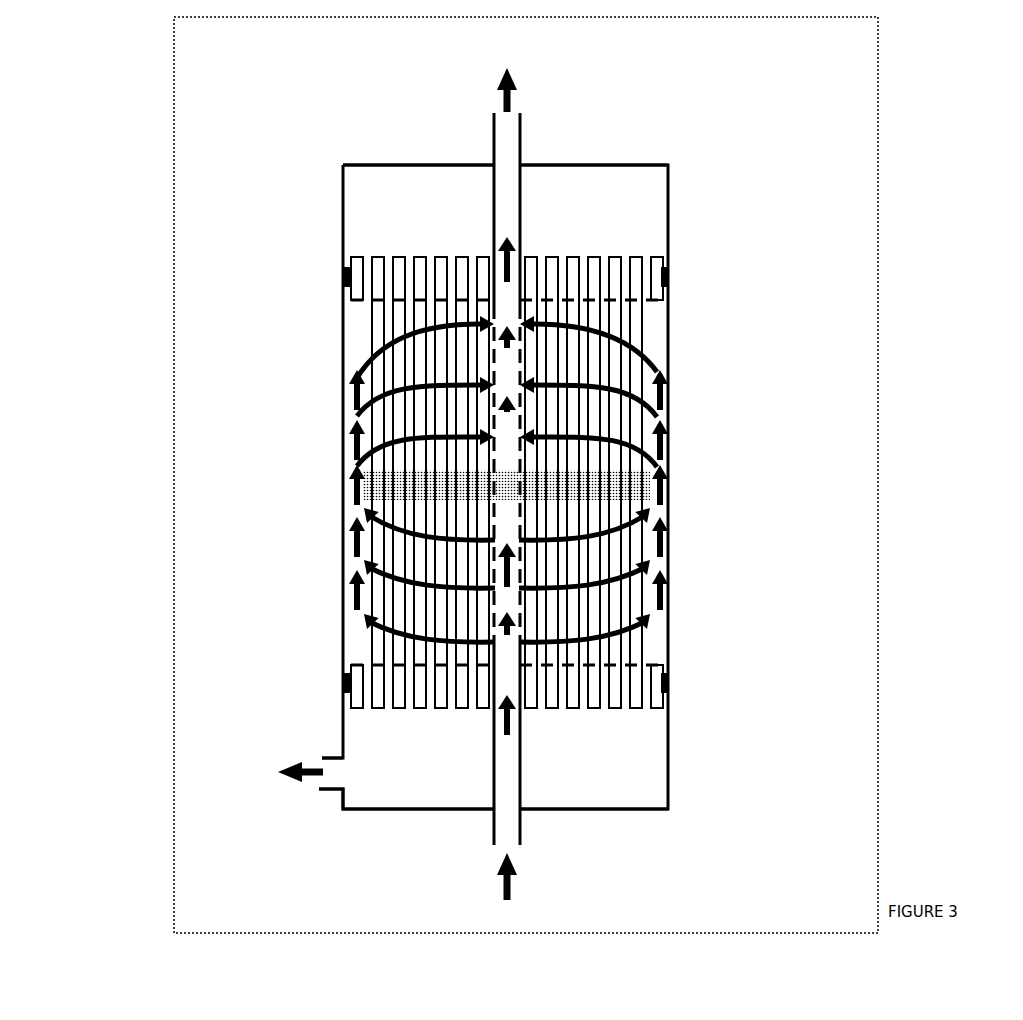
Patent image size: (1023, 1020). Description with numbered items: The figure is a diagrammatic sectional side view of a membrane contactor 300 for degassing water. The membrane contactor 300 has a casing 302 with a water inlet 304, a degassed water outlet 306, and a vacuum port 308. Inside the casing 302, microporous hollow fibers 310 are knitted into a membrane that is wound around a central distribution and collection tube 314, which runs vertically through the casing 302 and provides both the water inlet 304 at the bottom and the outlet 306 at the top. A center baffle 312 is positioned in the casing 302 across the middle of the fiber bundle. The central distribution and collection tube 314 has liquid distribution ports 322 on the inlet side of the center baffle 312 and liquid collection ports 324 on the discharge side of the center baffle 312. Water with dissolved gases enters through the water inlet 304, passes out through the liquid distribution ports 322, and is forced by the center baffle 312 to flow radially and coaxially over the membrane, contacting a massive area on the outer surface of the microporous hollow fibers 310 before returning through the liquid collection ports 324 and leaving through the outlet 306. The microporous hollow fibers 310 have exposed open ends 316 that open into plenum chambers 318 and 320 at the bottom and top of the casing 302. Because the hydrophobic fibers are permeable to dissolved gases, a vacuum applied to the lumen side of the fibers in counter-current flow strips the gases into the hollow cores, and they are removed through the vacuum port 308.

The membrane contactor 300 is at (173, 487).
The casing 302 is at (672, 607).
The water inlet 304 is at (533, 880).
The degassed water outlet 306 is at (524, 85).
The vacuum port 308 is at (272, 772).
The microporous hollow fibers 310 is at (638, 337).
The center baffle 312 is at (378, 487).
The central distribution and collection tube 314 is at (525, 610).
The exposed open ends 316 is at (635, 255).
The plenum chamber 318 is at (493, 780).
The plenum chamber 320 is at (505, 195).
The liquid distribution ports 322 is at (522, 538).
The liquid collection ports 324 is at (505, 385).